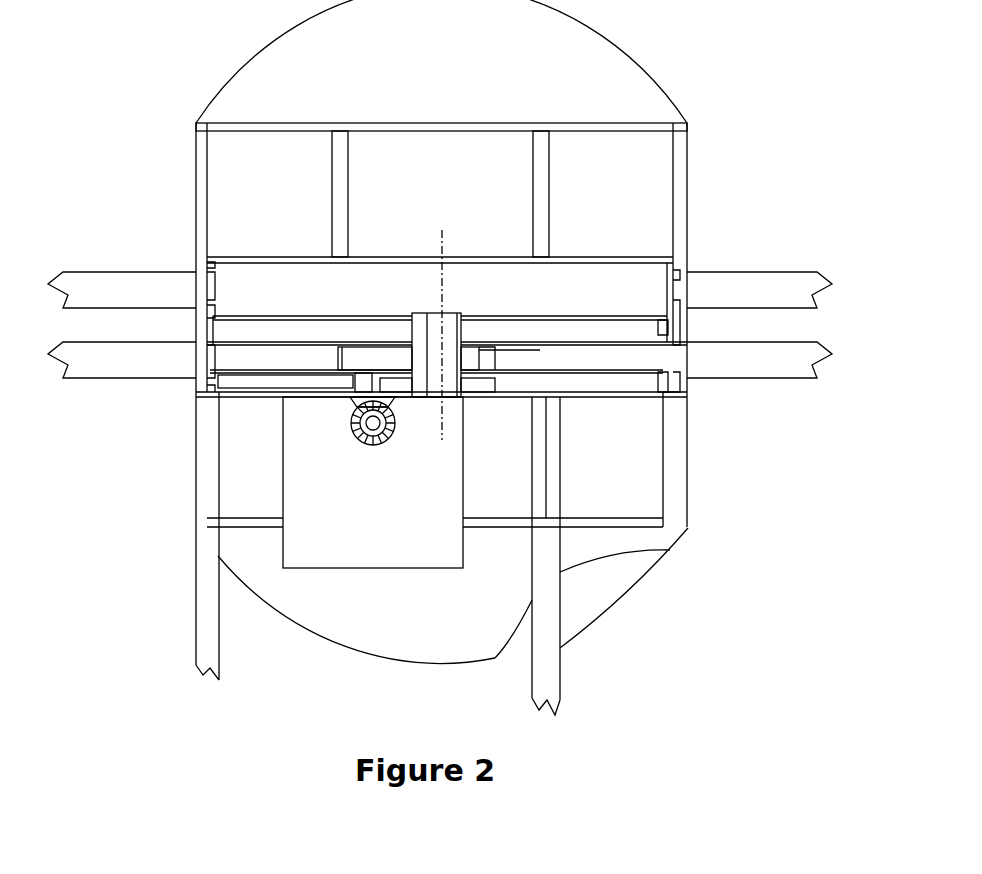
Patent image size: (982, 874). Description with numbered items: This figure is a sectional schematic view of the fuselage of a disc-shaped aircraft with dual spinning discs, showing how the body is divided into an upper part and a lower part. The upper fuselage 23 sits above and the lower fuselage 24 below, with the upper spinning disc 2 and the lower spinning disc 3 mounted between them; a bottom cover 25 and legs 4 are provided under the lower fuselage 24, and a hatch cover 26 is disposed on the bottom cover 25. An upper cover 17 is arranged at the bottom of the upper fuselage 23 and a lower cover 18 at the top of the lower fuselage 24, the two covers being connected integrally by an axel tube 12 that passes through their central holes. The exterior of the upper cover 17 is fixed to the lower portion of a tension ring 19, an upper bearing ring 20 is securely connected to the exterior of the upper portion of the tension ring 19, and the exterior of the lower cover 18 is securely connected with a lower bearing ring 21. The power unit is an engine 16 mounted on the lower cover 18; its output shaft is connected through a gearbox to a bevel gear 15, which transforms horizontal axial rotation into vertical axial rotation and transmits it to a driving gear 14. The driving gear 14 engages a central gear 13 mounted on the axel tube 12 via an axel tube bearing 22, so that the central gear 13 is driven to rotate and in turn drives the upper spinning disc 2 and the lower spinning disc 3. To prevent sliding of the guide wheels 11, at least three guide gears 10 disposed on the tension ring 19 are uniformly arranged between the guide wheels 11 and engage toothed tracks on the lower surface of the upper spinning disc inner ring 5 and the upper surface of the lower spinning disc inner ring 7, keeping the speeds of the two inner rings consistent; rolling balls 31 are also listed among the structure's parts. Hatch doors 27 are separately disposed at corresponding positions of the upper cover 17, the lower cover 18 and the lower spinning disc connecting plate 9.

The upper spinning disc 2 is at (713, 282).
The lower spinning disc 3 is at (732, 368).
The legs 4 is at (203, 556).
The upper spinning disc inner ring 5 is at (197, 311).
The lower spinning disc inner ring 7 is at (195, 362).
The lower spinning disc connecting plate 9 is at (300, 374).
The guide gear 10 is at (683, 333).
The guide wheel 11 is at (202, 316).
The axel tube 12 is at (440, 333).
The central gear 13 is at (477, 343).
The driving gear 14 is at (340, 345).
The bevel gear 15 is at (373, 428).
The engine 16 is at (405, 545).
The upper cover 17 is at (340, 343).
The lower cover 18 is at (287, 376).
The tension ring 19 is at (208, 260).
The upper bearing ring 20 is at (200, 286).
The lower bearing ring 21 is at (193, 388).
The axel tube bearing 22 is at (468, 347).
The upper fuselage 23 is at (647, 190).
The lower fuselage 24 is at (628, 472).
The bottom cover 25 is at (247, 572).
The hatch cover 26 is at (617, 578).
The hatch door 27 is at (635, 392).
The rolling balls 31 is at (690, 267).